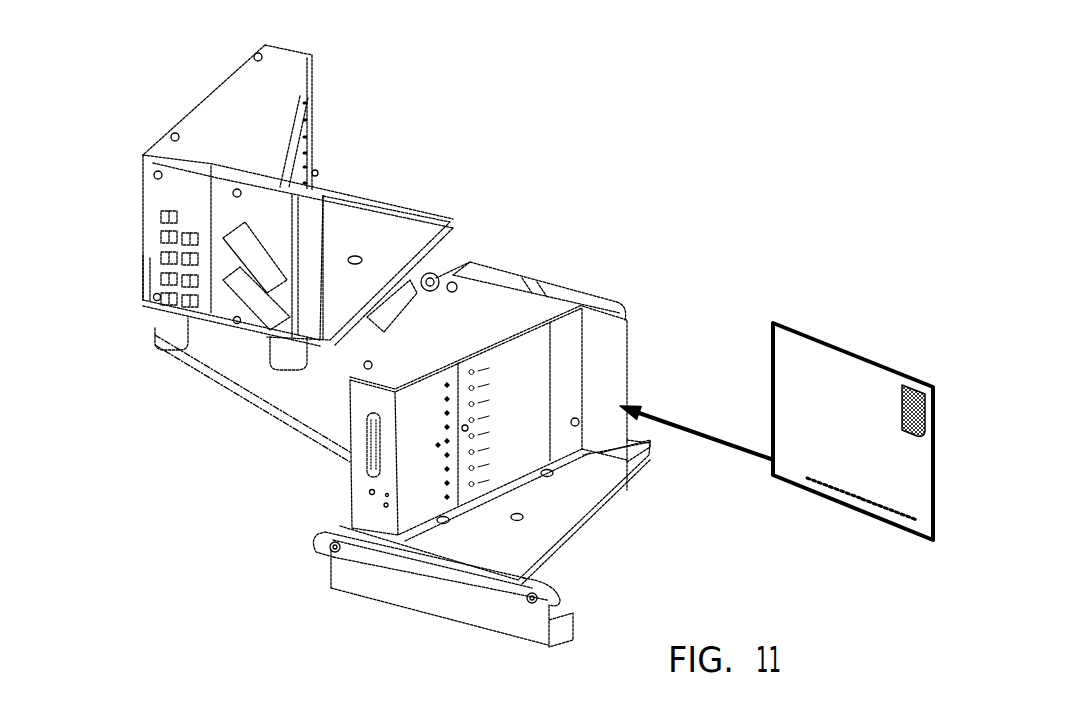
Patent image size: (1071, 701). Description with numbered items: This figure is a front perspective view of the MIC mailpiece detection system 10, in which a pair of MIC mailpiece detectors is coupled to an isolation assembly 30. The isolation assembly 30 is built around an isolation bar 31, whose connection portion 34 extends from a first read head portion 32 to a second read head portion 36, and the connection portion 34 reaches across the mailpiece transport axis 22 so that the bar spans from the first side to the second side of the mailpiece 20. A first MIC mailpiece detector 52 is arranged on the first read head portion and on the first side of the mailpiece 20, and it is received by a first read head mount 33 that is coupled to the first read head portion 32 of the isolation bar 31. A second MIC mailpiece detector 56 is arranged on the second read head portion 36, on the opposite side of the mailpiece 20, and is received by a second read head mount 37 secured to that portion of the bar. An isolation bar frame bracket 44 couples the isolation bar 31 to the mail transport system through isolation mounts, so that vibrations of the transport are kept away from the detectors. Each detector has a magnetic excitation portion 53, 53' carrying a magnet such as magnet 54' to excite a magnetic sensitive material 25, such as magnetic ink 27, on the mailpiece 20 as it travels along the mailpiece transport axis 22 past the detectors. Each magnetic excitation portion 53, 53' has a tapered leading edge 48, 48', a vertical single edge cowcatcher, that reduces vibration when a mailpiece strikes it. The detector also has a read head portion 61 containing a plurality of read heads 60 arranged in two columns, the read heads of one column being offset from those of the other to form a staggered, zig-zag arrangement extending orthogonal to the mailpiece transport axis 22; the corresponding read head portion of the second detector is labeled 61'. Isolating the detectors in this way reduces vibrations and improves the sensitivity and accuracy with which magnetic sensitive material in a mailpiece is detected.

The MIC mailpiece detection system 10 is at (168, 100).
The mailpiece 20 is at (893, 383).
The mailpiece transport axis 22 is at (672, 423).
The magnetic sensitive material 25 is at (807, 475).
The magnetic ink 27 is at (840, 490).
The isolation assembly 30 is at (547, 505).
The isolation bar 31 is at (330, 417).
The first read head portion 32 is at (617, 497).
The first read head mount 33 is at (532, 543).
The connection portion 34 is at (313, 403).
The second read head portion 36 is at (200, 347).
The second read head mount 37 is at (400, 247).
The isolation bar frame bracket 44 is at (372, 560).
The tapered leading edge 48 is at (665, 398).
The tapered leading edge 48' is at (368, 251).
The first MIC mailpiece detector 52 is at (600, 345).
The magnetic excitation portion 53 is at (619, 257).
The magnetic excitation portion 53' is at (224, 328).
The magnet 54' is at (258, 358).
The second MIC mailpiece detector 56 is at (267, 98).
The read heads 60 is at (173, 247).
The read head portion 61 is at (528, 252).
The mounting rail 61' is at (120, 331).